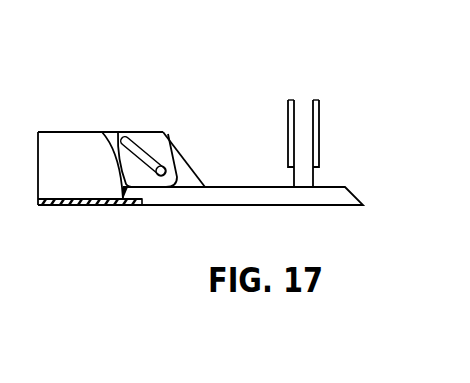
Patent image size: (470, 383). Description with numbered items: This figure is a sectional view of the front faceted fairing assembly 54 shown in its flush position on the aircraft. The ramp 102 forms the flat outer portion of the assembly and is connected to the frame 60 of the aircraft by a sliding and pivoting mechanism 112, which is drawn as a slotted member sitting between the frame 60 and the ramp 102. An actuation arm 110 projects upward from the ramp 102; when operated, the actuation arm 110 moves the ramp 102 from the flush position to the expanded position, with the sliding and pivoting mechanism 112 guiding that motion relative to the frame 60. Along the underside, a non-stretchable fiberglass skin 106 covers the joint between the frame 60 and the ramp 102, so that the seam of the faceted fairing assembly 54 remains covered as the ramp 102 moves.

The front faceted fairing assembly 54 is at (279, 40).
The frame 60 is at (57, 141).
The sliding and pivoting mechanism 112 is at (146, 132).
The second ramp 102 is at (333, 187).
The non-stretchable fiberglass skin 106 is at (97, 205).
The actuation arm 110 is at (322, 110).